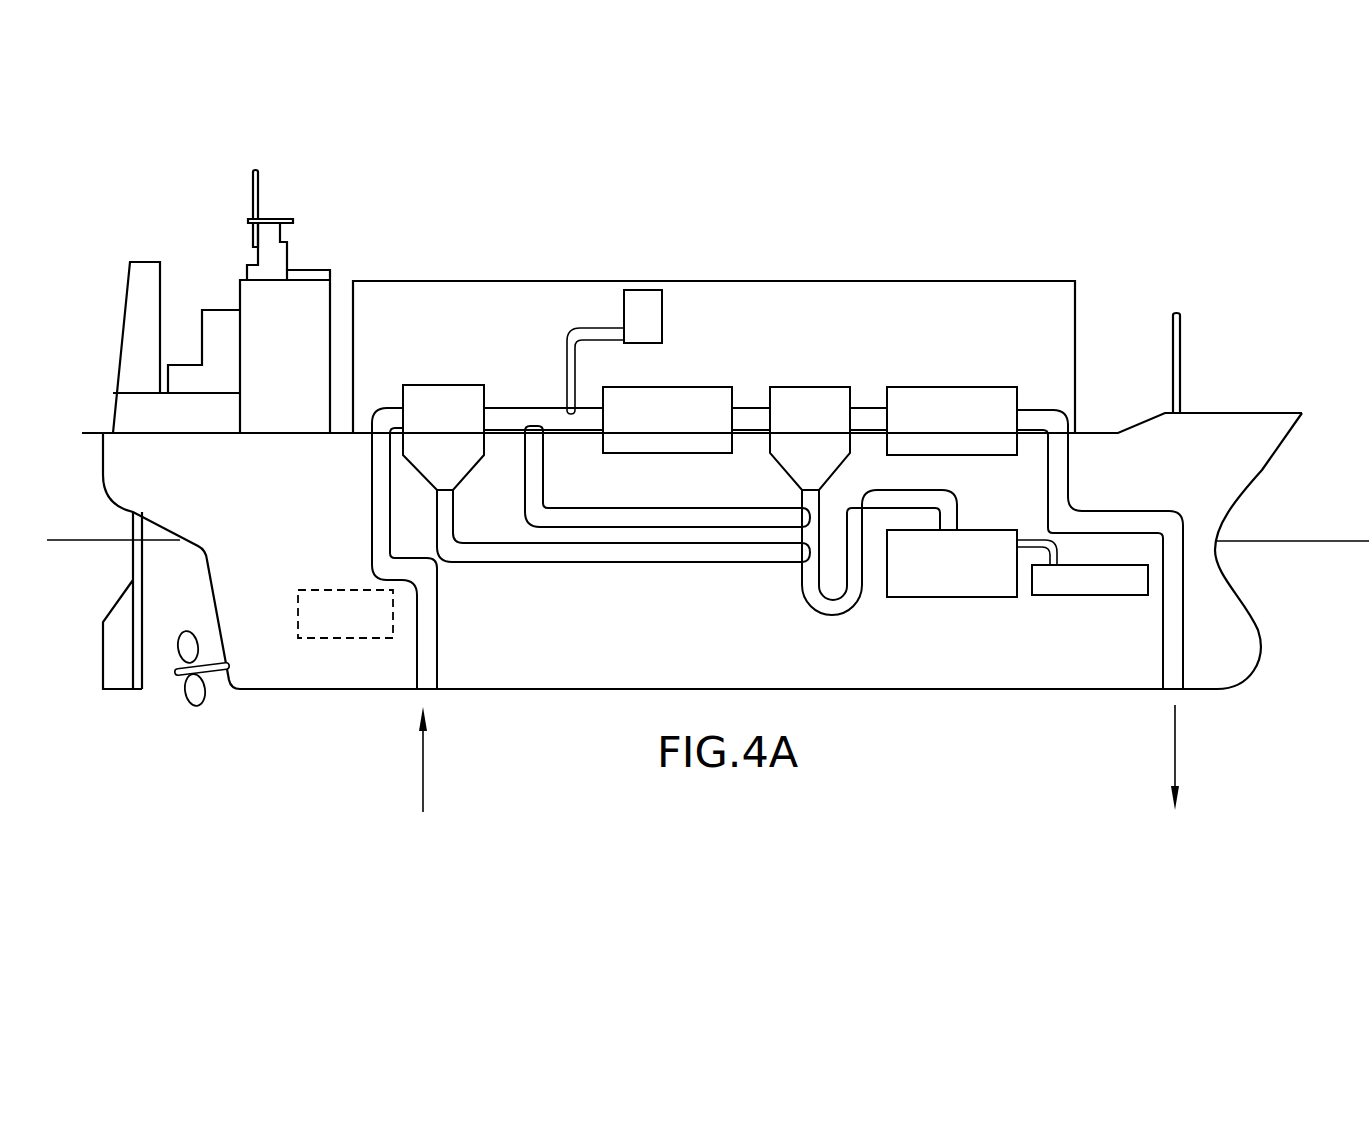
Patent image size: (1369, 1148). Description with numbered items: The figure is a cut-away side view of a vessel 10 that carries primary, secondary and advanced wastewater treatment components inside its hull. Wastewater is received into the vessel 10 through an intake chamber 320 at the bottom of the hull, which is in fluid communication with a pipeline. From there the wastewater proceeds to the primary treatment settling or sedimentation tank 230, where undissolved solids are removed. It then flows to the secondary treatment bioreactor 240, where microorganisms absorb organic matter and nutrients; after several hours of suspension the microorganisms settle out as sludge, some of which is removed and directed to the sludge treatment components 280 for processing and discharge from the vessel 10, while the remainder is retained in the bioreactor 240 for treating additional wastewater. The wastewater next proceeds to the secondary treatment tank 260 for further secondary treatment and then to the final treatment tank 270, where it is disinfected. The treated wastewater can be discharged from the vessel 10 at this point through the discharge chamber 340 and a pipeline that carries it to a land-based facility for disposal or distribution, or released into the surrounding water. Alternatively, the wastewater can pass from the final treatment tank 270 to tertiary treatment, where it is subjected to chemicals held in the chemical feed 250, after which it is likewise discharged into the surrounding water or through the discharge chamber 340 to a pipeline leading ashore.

The vessel 10 is at (1024, 218).
The primary treatment settling or sedimentation tank 230 is at (468, 435).
The secondary treatment bioreactor 240 is at (690, 435).
The chemical feed 250 is at (643, 305).
The secondary treatment tank 260 is at (835, 437).
The final treatment tank 270 is at (980, 437).
The sludge treatment components 280 is at (977, 578).
The intake chamber 320 is at (427, 673).
The discharge chamber 340 is at (1175, 667).